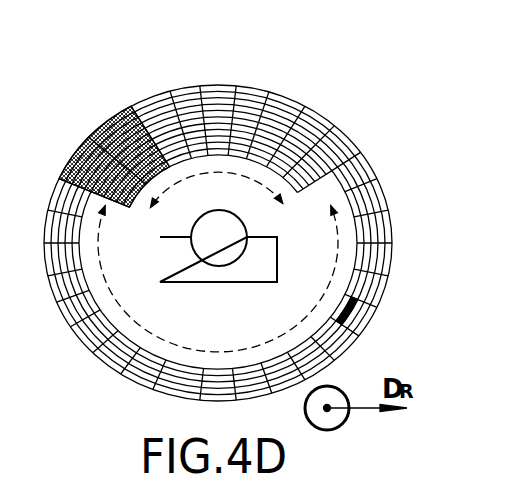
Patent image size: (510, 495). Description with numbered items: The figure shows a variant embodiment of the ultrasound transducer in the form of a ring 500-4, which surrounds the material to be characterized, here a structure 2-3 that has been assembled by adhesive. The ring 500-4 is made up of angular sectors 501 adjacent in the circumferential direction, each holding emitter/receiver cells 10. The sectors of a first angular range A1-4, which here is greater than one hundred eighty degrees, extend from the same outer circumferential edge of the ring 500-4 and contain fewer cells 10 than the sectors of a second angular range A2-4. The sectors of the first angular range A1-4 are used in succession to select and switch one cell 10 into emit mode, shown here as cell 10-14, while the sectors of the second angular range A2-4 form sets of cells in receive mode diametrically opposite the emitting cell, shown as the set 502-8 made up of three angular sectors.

The ring 500-4 is at (305, 94).
The emitter/receiver cell 10 is at (347, 142).
The angular sector 501 is at (249, 60).
The set of angular sectors 502-8 is at (82, 134).
The structure assembled by adhesive 2-3 is at (193, 276).
The first angular range A1-4 is at (216, 351).
The second angular range A2-4 is at (217, 174).
The cell switched into emit mode 10-14 is at (358, 318).